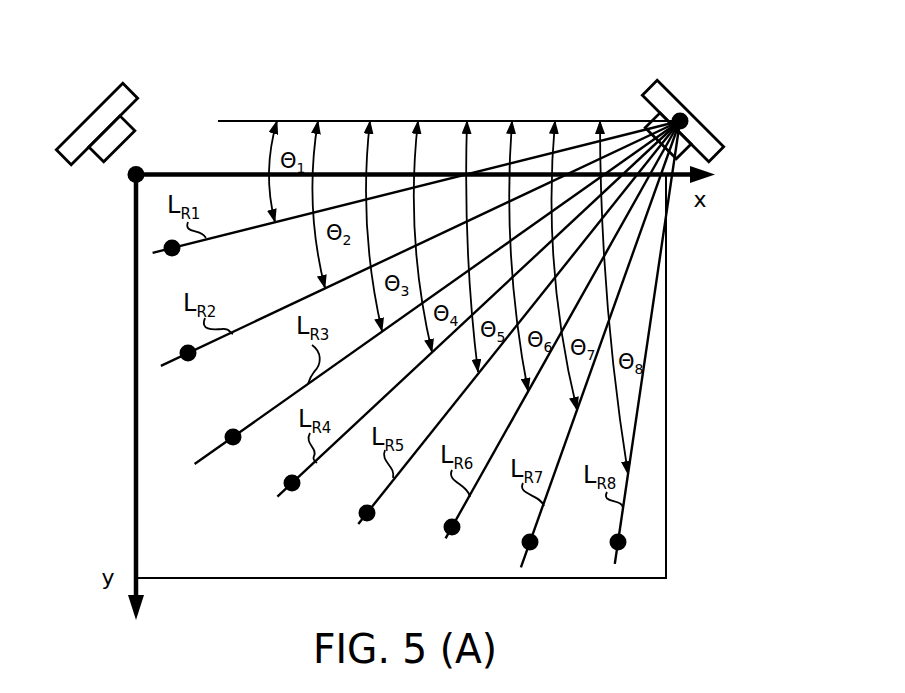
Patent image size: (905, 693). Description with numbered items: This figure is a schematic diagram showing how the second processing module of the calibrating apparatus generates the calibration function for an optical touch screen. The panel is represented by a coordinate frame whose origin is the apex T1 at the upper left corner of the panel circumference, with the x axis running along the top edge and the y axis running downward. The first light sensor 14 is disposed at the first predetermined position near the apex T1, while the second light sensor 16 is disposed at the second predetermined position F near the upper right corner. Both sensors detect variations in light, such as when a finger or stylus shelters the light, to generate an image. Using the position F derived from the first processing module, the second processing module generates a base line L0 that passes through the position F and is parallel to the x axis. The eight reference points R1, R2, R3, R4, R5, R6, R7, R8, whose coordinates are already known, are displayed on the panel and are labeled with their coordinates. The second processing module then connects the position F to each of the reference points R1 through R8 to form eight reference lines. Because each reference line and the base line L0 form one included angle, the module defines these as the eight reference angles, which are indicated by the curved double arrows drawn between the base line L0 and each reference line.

The first light sensor 14 is at (83, 120).
The second light sensor 16 is at (675, 103).
The second predetermined position F is at (687, 110).
The apex T1 is at (177, 165).
The base line L0 is at (427, 122).
The reference point R1 is at (416, 199).
The reference point R2 is at (420, 247).
The reference point R3 is at (415, 292).
The reference point R4 is at (454, 321).
The reference point R5 is at (491, 339).
The reference point R6 is at (535, 344).
The reference point R7 is at (520, 552).
The reference point R8 is at (613, 550).